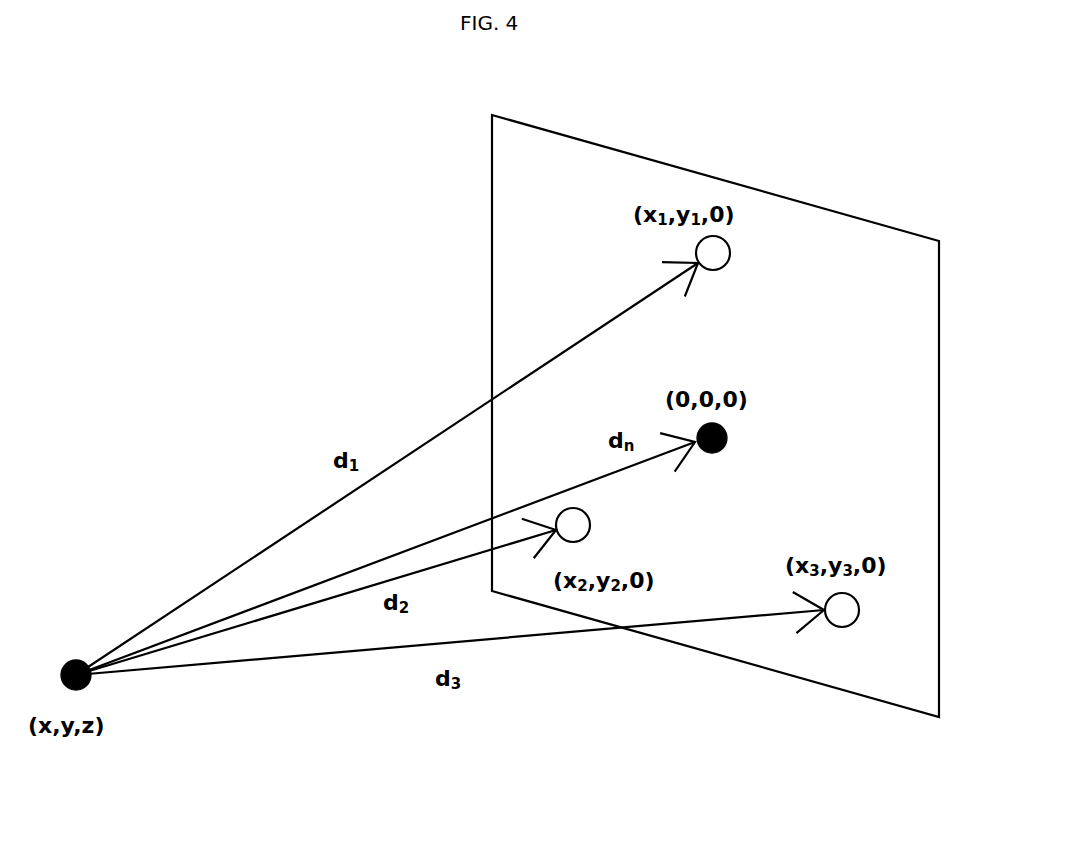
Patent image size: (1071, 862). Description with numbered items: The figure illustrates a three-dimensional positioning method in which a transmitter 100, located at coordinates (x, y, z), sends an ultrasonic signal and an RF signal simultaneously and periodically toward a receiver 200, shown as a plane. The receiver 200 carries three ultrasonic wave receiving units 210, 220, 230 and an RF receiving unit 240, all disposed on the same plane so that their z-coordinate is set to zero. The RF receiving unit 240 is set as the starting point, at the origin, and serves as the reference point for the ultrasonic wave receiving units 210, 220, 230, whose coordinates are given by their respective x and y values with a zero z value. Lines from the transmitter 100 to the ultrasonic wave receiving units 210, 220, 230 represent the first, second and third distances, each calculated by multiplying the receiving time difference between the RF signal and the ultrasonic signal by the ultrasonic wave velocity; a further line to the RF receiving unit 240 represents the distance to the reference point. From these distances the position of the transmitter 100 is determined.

The transmitter 100 is at (82, 661).
The receiver 200 is at (596, 138).
The ultrasonic wave receiving unit 1 210 is at (730, 253).
The ultrasonic wave receiving unit 2 220 is at (590, 524).
The ultrasonic wave receiving unit 3 230 is at (859, 610).
The RF receiving unit 240 is at (727, 438).